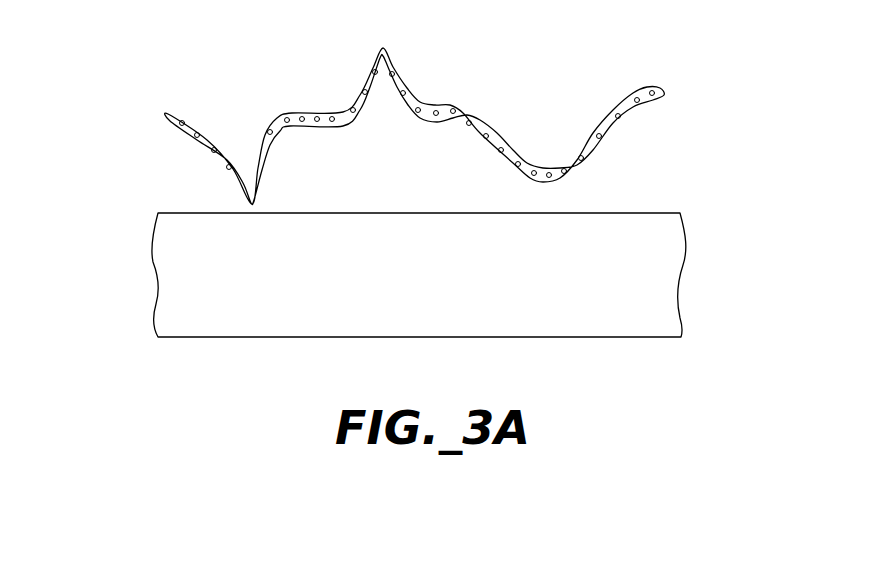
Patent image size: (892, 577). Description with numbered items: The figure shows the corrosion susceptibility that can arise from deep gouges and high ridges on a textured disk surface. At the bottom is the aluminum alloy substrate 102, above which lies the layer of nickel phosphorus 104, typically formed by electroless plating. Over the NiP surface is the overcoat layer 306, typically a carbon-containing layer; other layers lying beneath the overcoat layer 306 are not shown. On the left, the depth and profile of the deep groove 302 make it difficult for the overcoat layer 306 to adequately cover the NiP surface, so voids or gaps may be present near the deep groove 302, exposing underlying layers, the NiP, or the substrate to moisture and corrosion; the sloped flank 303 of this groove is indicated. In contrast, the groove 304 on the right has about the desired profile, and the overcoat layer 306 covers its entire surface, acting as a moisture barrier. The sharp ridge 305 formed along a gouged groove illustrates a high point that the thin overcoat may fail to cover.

The substrate 102 is at (663, 285).
The layer of nickel phosphorus 104 is at (663, 162).
The deep groove 302 is at (236, 199).
The slope of NiP layer 303 is at (245, 128).
The groove 304 is at (543, 188).
The ridge 305 is at (384, 46).
The overcoat layer 306 is at (163, 116).